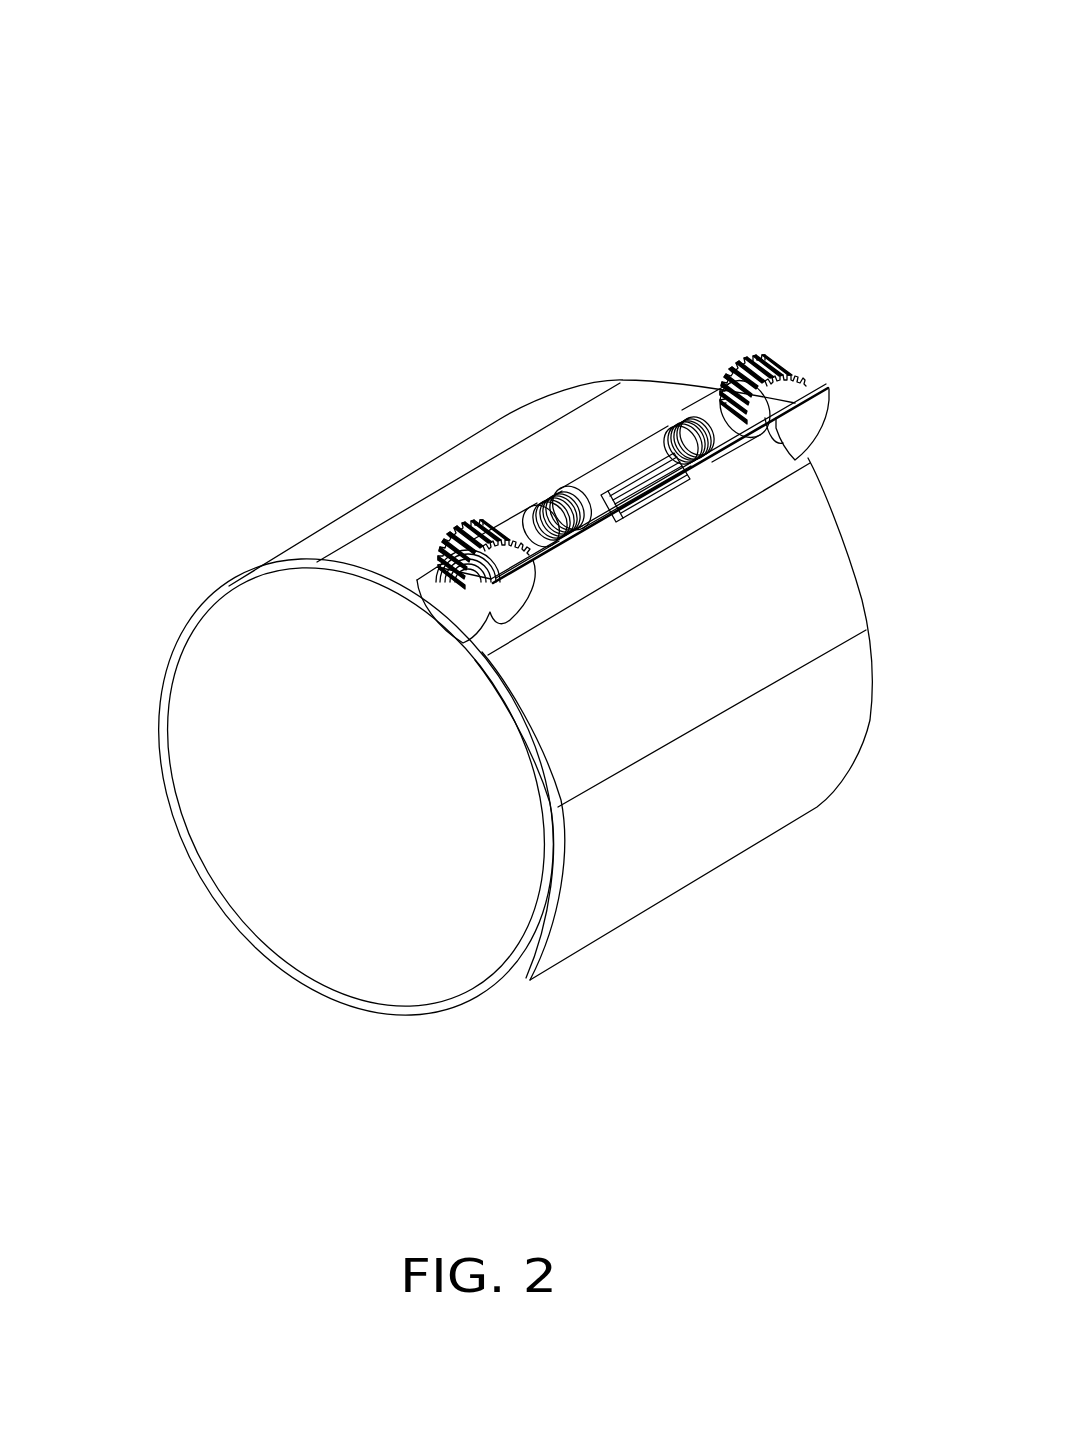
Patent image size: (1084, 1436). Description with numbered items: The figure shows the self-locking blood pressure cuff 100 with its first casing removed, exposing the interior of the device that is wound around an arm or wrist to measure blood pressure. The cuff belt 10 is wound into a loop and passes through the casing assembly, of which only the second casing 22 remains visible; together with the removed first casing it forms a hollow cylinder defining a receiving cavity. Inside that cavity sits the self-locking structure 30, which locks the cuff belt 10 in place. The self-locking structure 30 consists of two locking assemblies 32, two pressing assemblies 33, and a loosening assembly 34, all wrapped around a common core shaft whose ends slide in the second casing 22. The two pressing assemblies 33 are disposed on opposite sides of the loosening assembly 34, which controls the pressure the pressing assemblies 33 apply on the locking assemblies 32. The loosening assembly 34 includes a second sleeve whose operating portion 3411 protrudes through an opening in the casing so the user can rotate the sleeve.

The self-locking blood pressure cuff 100 is at (523, 40).
The cuff belt 10 is at (833, 597).
The second casing 22 is at (490, 588).
The self-locking structure 30 is at (638, 445).
The locking assembly 32 is at (475, 525).
The pressing assembly 33 is at (530, 522).
The loosening assembly 34 is at (602, 471).
The operating portion 3411 is at (683, 473).